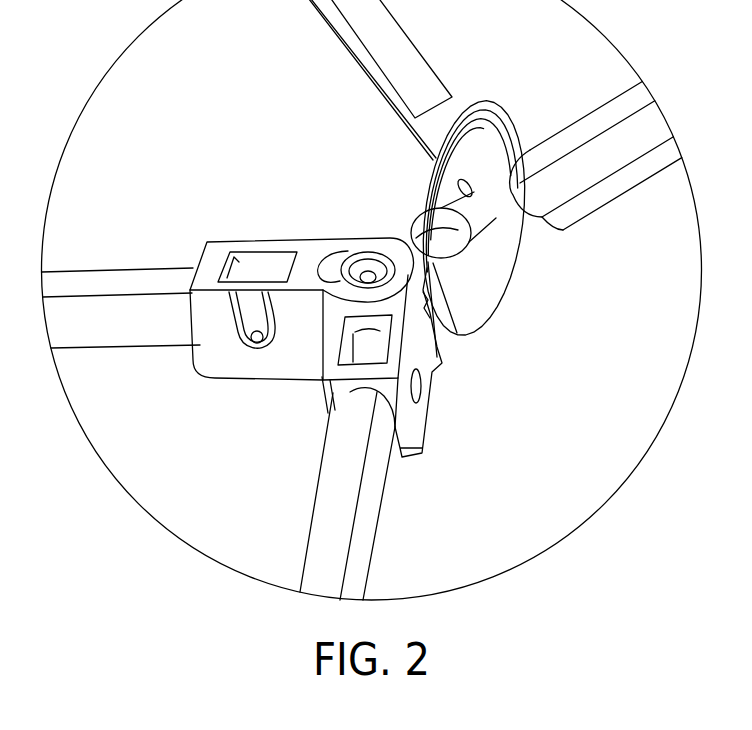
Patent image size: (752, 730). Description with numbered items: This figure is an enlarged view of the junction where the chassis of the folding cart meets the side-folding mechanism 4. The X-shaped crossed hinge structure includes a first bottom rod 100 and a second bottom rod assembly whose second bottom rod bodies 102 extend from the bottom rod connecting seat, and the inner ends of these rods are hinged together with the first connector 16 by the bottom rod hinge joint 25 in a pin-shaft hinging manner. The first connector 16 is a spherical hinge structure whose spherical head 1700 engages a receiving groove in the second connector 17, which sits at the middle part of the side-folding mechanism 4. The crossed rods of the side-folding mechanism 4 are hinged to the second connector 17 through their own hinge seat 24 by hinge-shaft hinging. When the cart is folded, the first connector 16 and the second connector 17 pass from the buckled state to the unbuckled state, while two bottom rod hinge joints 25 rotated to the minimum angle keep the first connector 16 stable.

The second bottom rod body 102 is at (97, 283).
The first connector 16 is at (452, 230).
The hinge seat of the side-folding mechanism 24 is at (489, 112).
The side-folding mechanism 4 is at (586, 152).
The first spherical hinge structure / first receiving groove 1700 is at (486, 222).
The second connector 17 is at (478, 297).
The bottom rod hinge joint 25 is at (428, 412).
The first bottom rod 100 is at (326, 528).